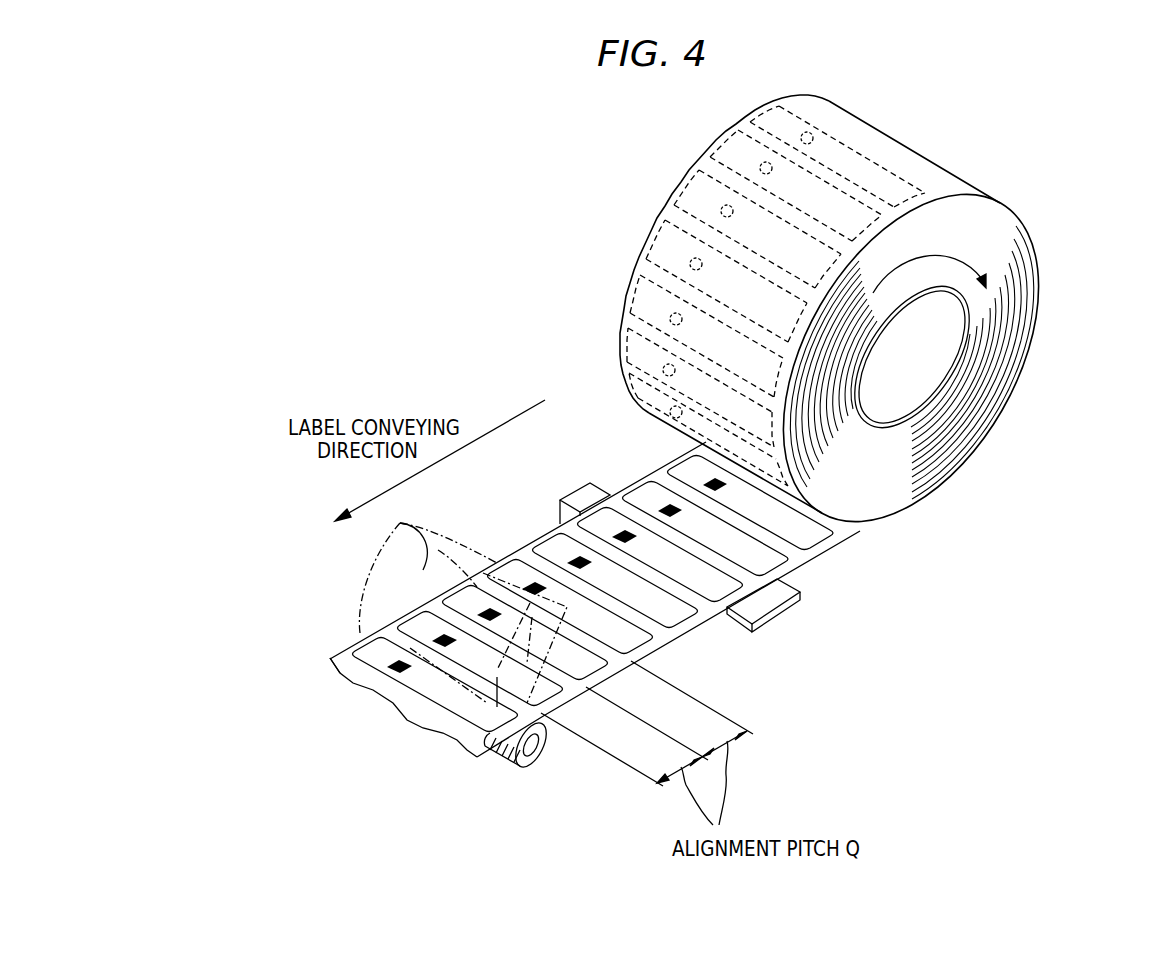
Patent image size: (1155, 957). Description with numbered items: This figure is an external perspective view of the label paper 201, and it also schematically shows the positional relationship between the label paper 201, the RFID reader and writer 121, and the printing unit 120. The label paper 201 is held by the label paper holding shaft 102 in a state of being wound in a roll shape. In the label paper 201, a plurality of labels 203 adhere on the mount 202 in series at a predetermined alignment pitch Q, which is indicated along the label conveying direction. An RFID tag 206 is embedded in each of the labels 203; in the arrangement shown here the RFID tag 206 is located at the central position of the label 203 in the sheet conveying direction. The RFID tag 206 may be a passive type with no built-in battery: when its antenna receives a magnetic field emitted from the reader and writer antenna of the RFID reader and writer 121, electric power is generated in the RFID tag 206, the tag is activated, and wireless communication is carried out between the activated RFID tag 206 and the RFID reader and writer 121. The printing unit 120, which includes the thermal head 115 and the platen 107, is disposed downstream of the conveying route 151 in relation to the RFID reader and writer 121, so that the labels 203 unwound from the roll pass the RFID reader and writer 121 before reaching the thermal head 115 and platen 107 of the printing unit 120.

The label paper holding shaft 102 is at (931, 373).
The platen 107 is at (532, 771).
The thermal head 115 is at (437, 533).
The printing unit 120 is at (326, 610).
The RFID reader and writer 121 is at (800, 612).
The conveying route 151 is at (872, 601).
The label paper 201 is at (942, 462).
The mount 202 is at (663, 641).
The label 203 is at (733, 611).
The RFID tag 206 is at (668, 506).